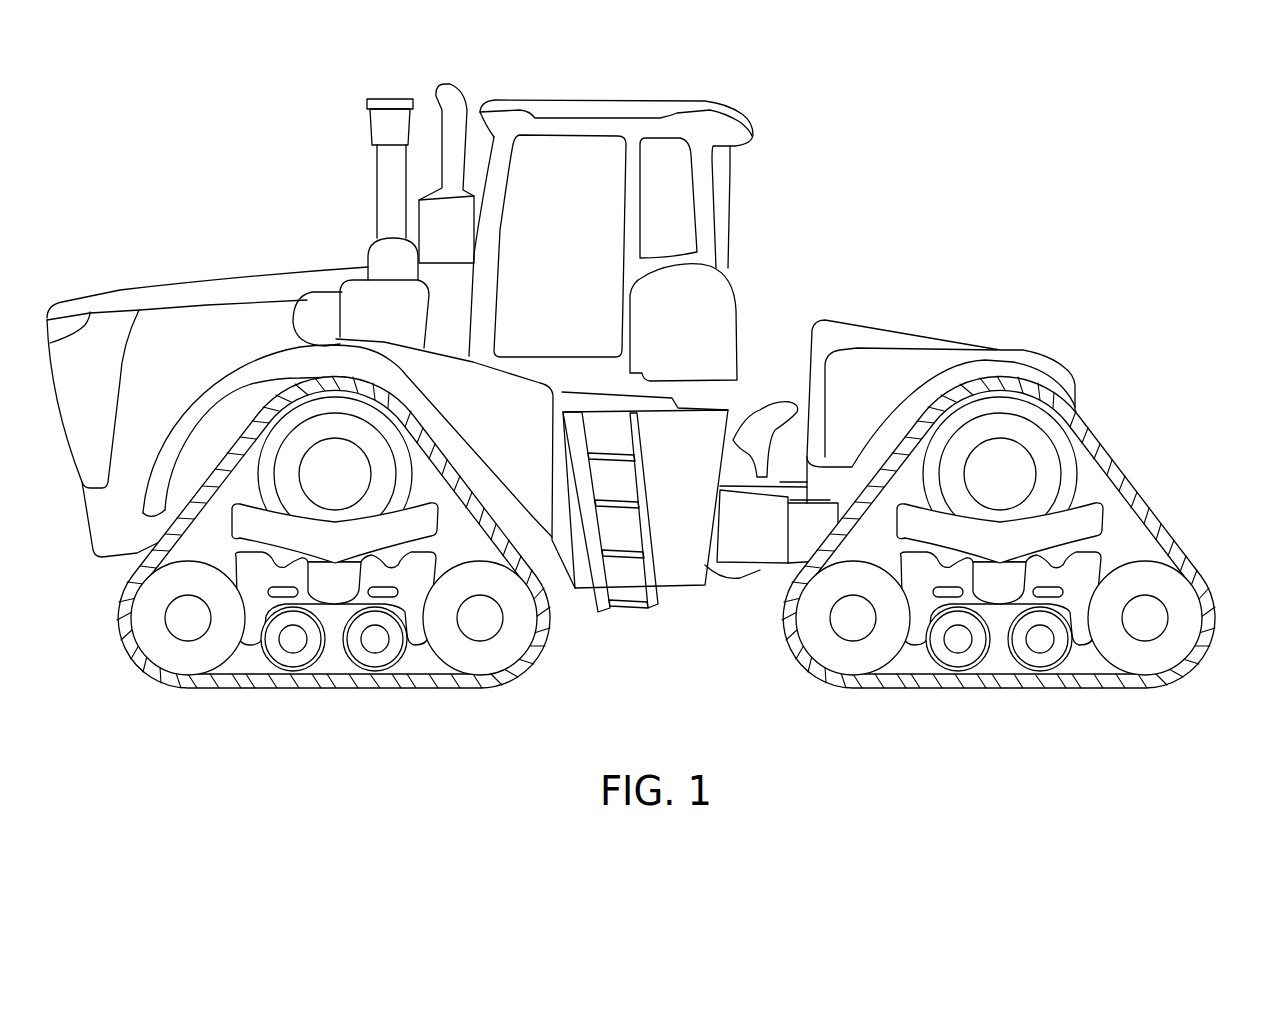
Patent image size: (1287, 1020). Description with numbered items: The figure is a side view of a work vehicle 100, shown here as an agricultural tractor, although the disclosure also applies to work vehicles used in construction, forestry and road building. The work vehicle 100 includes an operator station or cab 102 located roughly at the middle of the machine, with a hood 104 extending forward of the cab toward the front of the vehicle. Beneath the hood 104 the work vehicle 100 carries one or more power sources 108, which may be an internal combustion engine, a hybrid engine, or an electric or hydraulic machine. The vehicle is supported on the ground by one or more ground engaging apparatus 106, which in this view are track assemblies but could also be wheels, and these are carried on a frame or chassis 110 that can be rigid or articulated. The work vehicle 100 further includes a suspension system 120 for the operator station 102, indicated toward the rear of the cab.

The work vehicle 100 is at (850, 108).
The operator station or cab 102 is at (592, 102).
The hood 104 is at (130, 290).
The ground engaging apparatus 106 is at (118, 652).
The power source 108 is at (220, 330).
The frame or chassis 110 is at (705, 527).
The suspension system 120 is at (772, 314).